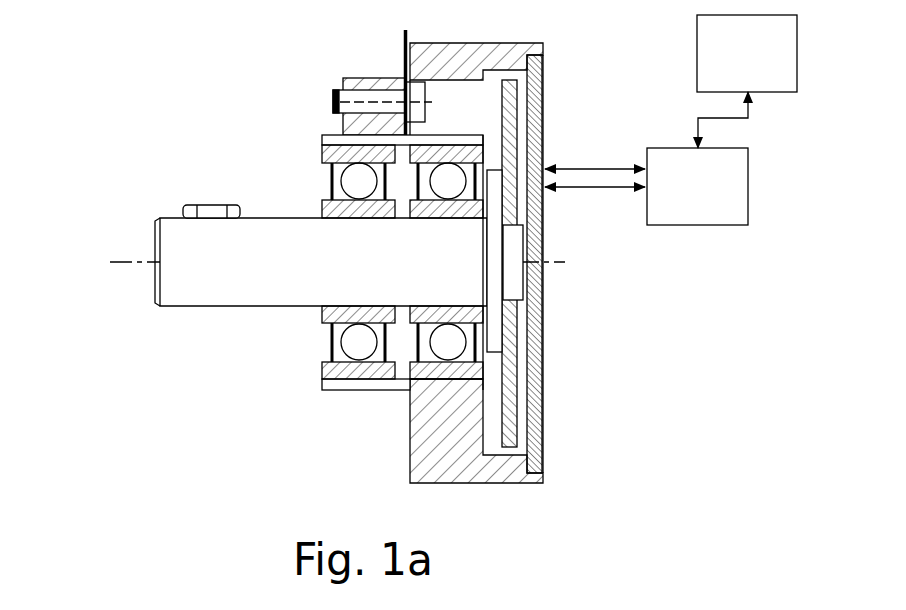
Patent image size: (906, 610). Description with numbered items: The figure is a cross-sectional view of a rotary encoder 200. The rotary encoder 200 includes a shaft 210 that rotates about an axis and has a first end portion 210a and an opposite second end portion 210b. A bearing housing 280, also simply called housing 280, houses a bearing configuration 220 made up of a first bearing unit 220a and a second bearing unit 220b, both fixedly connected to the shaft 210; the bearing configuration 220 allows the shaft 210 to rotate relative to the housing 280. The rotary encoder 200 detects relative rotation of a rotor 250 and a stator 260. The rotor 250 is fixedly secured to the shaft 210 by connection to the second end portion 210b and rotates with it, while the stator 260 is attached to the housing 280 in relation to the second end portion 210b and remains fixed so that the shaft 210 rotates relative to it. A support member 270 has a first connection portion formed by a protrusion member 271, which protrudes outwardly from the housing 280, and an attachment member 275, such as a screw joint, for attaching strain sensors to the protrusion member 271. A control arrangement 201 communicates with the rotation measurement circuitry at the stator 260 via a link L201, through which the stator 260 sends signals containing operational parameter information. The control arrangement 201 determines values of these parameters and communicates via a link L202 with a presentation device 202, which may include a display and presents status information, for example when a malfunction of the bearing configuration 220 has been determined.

The rotary encoder 200 is at (205, 82).
The control arrangement 201 is at (697, 186).
The presentation device 202 is at (747, 53).
The link L201 is at (612, 169).
The link L202 is at (700, 118).
The shaft 210 is at (180, 298).
The first end portion 210a is at (158, 228).
The second end portion 210b is at (522, 272).
The bearing configuration 220 is at (335, 284).
The first bearing unit 220a is at (334, 374).
The second bearing unit 220b is at (410, 372).
The rotor 250 is at (512, 427).
The stator 260 is at (535, 347).
The support member 270 is at (403, 56).
The protrusion member 271 is at (355, 130).
The attachment member 275 is at (339, 100).
The bearing housing 280 is at (447, 477).